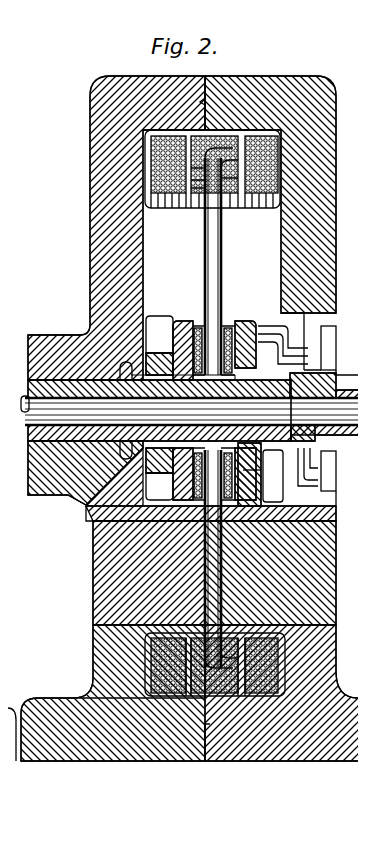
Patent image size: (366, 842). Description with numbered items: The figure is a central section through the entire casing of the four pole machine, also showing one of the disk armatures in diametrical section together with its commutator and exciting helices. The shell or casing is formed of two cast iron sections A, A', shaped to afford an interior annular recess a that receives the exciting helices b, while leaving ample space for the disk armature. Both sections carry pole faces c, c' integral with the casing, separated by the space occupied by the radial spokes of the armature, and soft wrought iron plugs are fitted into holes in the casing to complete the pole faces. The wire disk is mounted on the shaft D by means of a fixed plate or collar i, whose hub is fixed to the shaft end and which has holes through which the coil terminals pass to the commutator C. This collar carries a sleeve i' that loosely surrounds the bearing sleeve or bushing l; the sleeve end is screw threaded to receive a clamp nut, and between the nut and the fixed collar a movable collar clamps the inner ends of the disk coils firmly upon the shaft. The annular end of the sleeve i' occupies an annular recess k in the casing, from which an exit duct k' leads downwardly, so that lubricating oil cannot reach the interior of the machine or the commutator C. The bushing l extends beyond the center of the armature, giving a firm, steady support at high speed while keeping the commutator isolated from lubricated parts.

The casing section A is at (116, 228).
The casing section A' is at (281, 258).
The exciting helices b is at (164, 185).
The interior annular recess a is at (181, 690).
The shaft D is at (191, 411).
The annular recess k is at (158, 353).
The exit duct k' is at (159, 472).
The pole face c is at (197, 492).
The pole face c' is at (298, 482).
The commutator C is at (308, 344).
The sleeve i' is at (92, 380).
The fixed plate or collar i is at (252, 455).
The bearing sleeve or bushing l is at (17, 388).